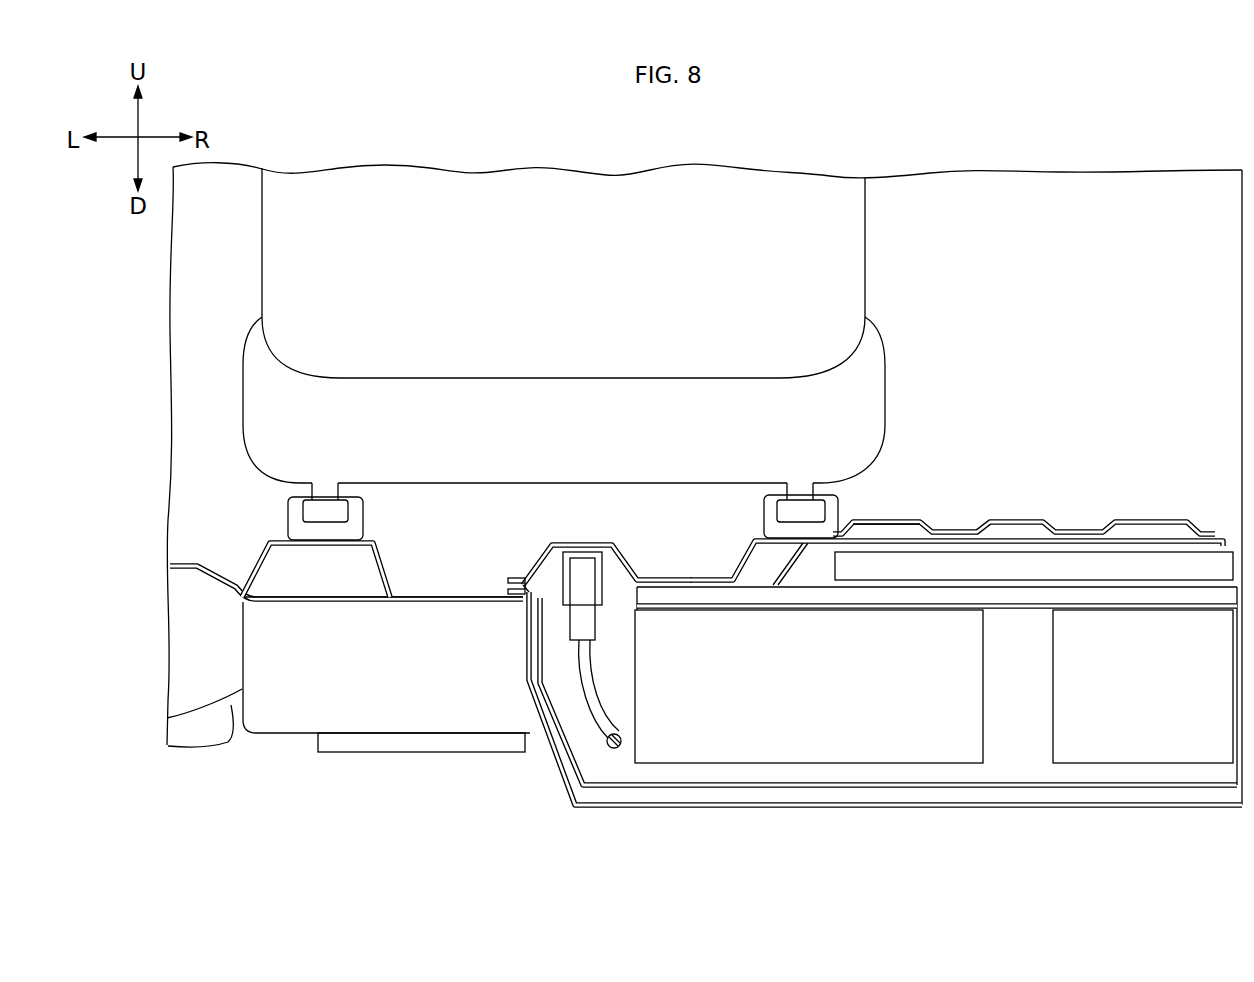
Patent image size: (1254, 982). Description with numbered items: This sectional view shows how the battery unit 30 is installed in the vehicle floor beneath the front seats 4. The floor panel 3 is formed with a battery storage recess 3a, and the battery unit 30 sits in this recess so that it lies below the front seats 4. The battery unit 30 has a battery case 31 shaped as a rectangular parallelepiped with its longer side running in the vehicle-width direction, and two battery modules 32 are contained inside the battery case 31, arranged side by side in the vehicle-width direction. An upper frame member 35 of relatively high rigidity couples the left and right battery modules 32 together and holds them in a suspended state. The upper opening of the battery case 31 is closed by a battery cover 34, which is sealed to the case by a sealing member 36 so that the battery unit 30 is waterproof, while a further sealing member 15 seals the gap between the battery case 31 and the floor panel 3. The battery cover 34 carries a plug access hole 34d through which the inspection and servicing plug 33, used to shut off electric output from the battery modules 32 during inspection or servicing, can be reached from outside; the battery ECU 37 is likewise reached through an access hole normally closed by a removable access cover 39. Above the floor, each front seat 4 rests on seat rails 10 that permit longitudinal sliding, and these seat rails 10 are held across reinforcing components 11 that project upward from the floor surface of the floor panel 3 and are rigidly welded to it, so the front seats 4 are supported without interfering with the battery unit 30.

The front seat 4 is at (840, 236).
The seat rail 10 is at (356, 520).
The reinforcing component 11 is at (383, 566).
The sealing member 36 is at (518, 578).
The plug access hole 34d is at (571, 545).
The sealing member 15 is at (513, 604).
The inspection and servicing plug 33 is at (580, 620).
The floor panel 3 is at (445, 597).
The battery storage recess 3a is at (657, 804).
The battery cover 34 is at (673, 578).
The battery module 32 is at (882, 728).
The battery case 31 is at (1020, 790).
The upper frame member 35 is at (1012, 614).
The battery ECU 37 is at (1078, 568).
The access cover 39 is at (1020, 521).
The battery unit 30 is at (1151, 516).